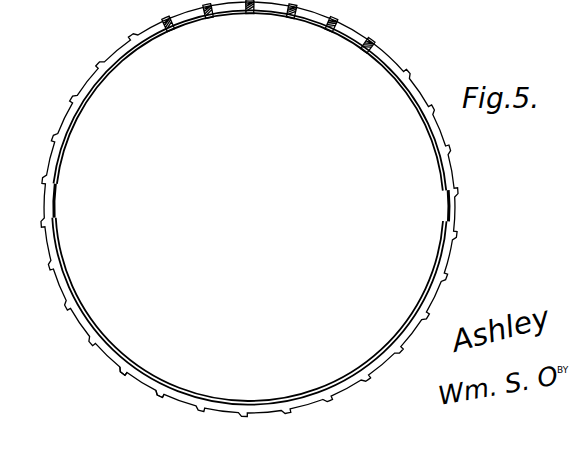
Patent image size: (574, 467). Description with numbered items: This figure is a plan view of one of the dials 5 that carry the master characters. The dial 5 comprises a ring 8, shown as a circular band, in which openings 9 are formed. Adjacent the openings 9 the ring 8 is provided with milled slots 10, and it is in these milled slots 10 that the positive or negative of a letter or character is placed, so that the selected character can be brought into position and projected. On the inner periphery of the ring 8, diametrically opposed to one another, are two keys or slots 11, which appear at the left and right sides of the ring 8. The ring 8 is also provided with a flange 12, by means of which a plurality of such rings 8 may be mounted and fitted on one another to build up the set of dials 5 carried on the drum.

The dial 5 is at (408, 88).
The ring 8 is at (288, 17).
The opening 9 is at (222, 11).
The milled slot 10 is at (338, 21).
The key or slot 11 is at (56, 199).
The flange 12 is at (73, 288).